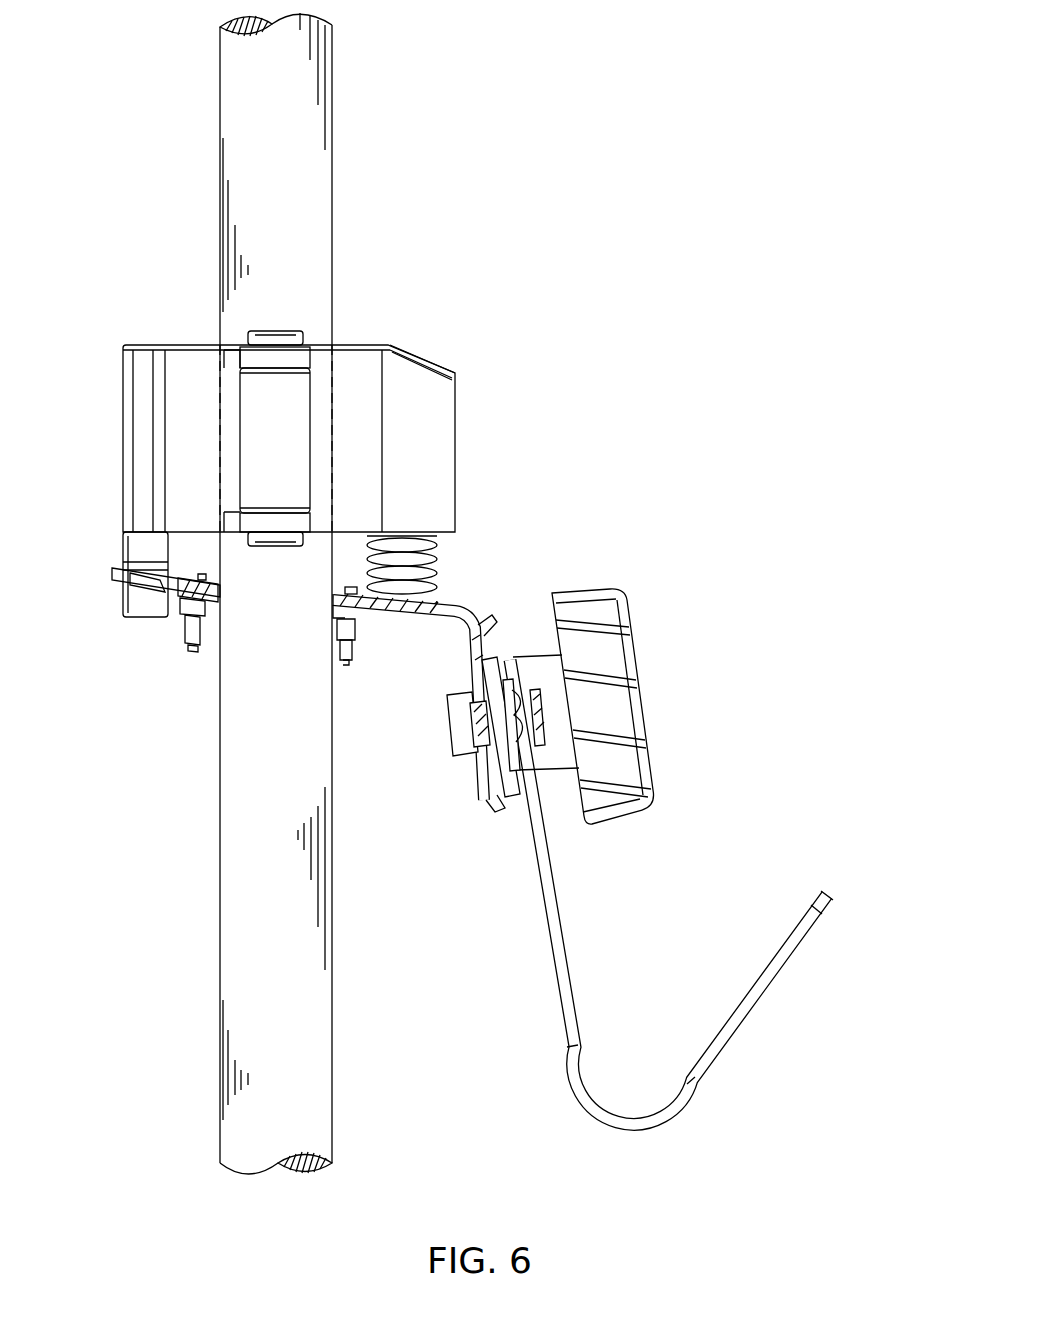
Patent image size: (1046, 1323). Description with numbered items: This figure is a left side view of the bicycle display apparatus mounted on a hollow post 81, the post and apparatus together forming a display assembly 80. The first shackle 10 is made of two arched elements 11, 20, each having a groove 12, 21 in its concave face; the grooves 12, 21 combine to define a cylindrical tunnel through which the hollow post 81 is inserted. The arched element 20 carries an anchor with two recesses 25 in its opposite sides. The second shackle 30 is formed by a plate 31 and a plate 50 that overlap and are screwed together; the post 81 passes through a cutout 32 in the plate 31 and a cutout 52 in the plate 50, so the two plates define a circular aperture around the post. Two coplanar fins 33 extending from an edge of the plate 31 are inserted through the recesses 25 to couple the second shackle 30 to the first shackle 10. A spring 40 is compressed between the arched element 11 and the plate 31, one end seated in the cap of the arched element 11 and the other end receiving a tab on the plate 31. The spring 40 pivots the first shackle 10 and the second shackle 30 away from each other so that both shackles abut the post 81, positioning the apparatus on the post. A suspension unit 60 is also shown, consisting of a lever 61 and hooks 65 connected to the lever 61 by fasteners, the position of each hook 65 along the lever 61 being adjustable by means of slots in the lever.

The display assembly 80 is at (633, 224).
The hollow post 81 is at (317, 203).
The first shackle 10 is at (437, 213).
The arched element 11 is at (347, 370).
The groove 12 is at (332, 412).
The arched element 20 is at (190, 382).
The groove 21 is at (225, 453).
The recesses 25 is at (124, 572).
The second shackle 30 is at (437, 702).
The plate 31 is at (382, 612).
The cutout 32 is at (233, 585).
The coplanar fins 33 is at (113, 580).
The spring 40 is at (420, 612).
The plate 50 is at (362, 617).
The cutout 52 is at (332, 612).
The suspension unit 60 is at (490, 892).
The lever 61 is at (498, 762).
The hooks 65 is at (533, 823).